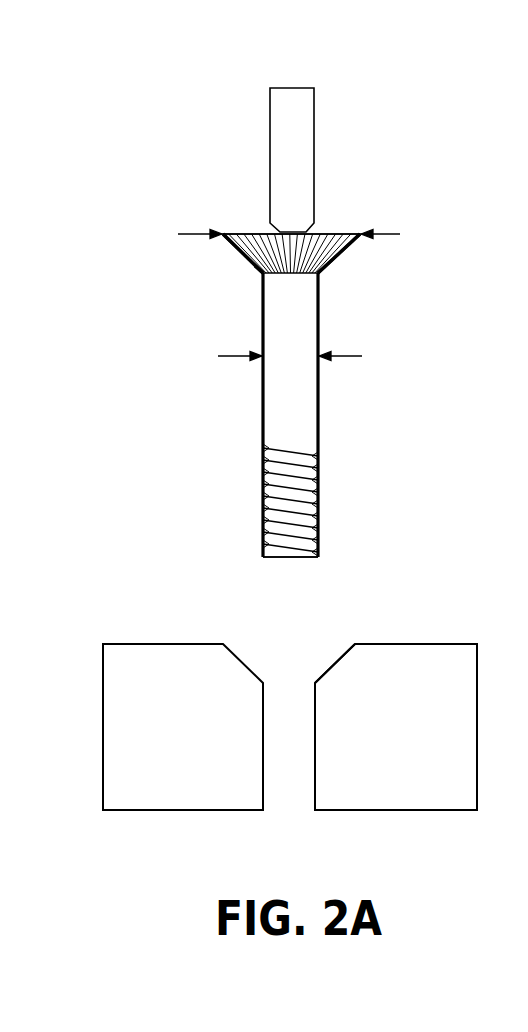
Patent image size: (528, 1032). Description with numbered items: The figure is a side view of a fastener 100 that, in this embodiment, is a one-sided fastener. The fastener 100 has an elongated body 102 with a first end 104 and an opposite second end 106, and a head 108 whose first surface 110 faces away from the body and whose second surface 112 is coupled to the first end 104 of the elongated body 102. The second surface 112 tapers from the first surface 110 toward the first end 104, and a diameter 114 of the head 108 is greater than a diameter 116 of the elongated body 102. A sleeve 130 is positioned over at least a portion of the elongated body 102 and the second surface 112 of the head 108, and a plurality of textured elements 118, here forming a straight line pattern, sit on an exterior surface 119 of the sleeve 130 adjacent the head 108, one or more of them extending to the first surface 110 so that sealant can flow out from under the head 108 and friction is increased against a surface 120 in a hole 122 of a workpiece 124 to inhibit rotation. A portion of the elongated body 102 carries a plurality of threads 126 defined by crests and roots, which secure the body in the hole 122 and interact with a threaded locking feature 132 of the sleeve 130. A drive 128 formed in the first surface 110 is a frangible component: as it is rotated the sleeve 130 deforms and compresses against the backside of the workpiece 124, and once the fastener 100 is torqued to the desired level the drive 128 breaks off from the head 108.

The fastener 100 is at (97, 125).
The elongated body 102 is at (313, 392).
The first end 104 is at (326, 273).
The second end 106 is at (287, 562).
The head 108 is at (248, 246).
The first surface 110 is at (330, 232).
The second surface 112 is at (248, 250).
The diameter of the head 114 is at (192, 236).
The diameter of the elongated body 116 is at (229, 358).
The plurality of textured elements 118 is at (351, 248).
The exterior surface 119 is at (251, 266).
The surface 120 is at (332, 664).
The hole 122 is at (298, 684).
The workpiece 124 is at (400, 660).
The plurality of threads 126 is at (293, 452).
The drive 128 is at (297, 95).
The sleeve 130 is at (265, 517).
The threaded locking feature 132 is at (267, 487).